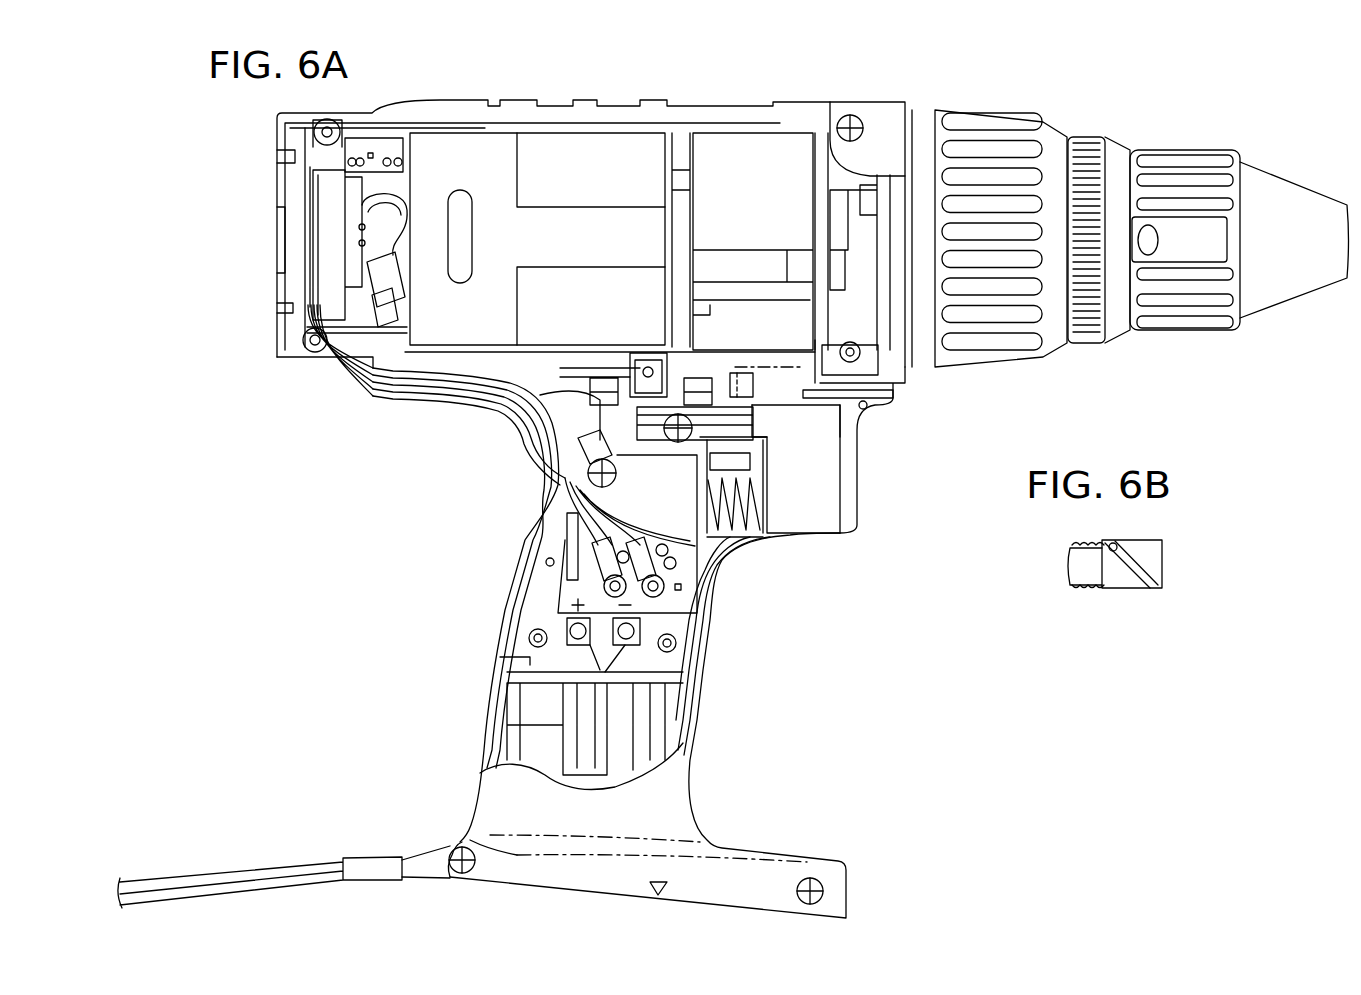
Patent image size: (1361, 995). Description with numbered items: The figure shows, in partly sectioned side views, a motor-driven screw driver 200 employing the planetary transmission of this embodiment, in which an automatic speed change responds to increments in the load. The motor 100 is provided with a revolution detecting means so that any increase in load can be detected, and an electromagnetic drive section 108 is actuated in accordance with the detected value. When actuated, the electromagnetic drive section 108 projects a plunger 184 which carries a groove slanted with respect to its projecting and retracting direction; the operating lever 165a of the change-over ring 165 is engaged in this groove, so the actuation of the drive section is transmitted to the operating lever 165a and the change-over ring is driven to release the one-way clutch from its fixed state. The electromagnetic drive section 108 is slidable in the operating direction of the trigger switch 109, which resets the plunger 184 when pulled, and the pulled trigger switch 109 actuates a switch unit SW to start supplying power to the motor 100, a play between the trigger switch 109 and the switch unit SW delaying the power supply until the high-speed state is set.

In FIG. 6A, the motor 100 is at (494, 168).
In FIG. 6A, the motor-driven screw driver 200 is at (722, 98).
In FIG. 6A, the electromagnetic drive section 108 is at (640, 376).
In FIG. 6A, the change-over ring 165 is at (752, 358).
In FIG. 6A, the plunger 184 is at (770, 408).
In FIG. 6B, the plunger 184 is at (1155, 555).
In FIG. 6A, the trigger switch 109 is at (826, 537).
In FIG. 6A, the switch unit SW is at (693, 563).
In FIG. 6B, the operating lever 165a is at (1112, 588).